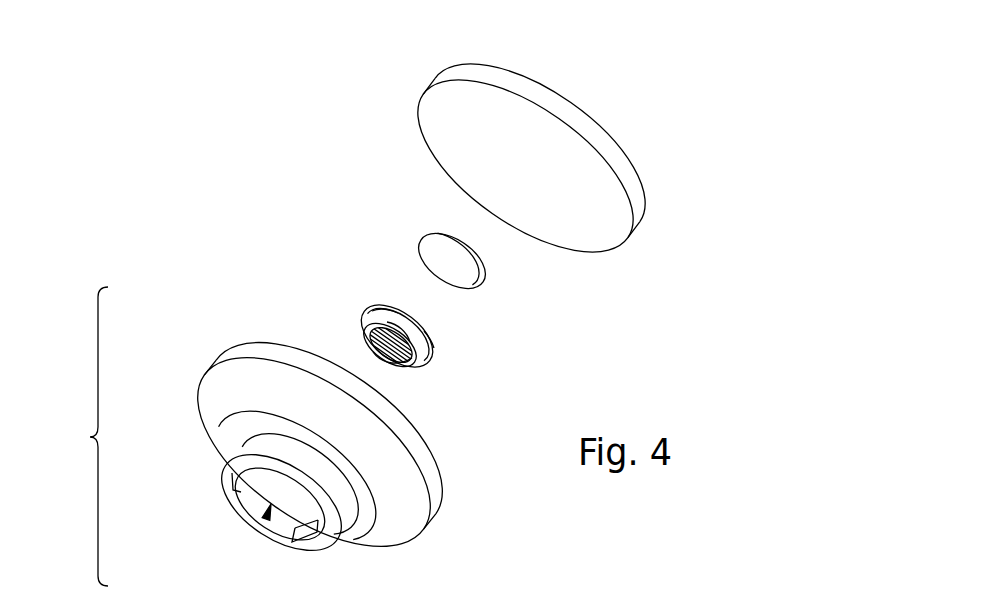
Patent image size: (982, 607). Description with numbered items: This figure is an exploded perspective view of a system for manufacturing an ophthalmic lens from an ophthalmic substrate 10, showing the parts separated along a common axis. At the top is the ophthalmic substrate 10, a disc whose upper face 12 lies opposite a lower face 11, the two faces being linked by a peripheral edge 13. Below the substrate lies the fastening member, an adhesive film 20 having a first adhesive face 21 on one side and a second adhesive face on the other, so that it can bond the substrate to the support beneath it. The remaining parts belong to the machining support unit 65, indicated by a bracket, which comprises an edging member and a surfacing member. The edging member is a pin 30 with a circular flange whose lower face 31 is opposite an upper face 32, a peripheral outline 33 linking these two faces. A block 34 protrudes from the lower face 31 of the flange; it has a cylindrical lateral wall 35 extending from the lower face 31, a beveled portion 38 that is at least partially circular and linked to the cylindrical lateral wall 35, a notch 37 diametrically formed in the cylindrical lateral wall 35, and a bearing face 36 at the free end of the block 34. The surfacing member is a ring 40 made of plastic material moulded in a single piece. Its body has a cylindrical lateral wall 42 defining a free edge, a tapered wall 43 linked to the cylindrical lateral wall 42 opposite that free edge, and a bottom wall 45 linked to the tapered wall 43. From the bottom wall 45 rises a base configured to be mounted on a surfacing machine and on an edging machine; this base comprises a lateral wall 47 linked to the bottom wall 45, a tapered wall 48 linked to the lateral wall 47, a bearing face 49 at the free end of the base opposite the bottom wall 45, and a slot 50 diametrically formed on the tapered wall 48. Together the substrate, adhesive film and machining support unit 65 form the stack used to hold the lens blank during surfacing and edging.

The ophthalmic substrate 10 is at (507, 163).
The lower face 11 is at (588, 249).
The upper face 12 is at (582, 108).
The peripheral edge 13 is at (612, 150).
The adhesive film 20 is at (435, 245).
The first adhesive face 21 is at (478, 284).
The pin 30 is at (386, 330).
The lower face 31 is at (423, 358).
The upper face 32 is at (382, 306).
The peripheral outline 33 is at (428, 340).
The block 34 is at (372, 341).
The cylindrical lateral wall 35 is at (362, 322).
The bearing face 36 is at (388, 308).
The notch 37 is at (410, 368).
The beveled portion 38 is at (408, 316).
The ring 40 is at (313, 448).
The cylindrical lateral wall 42 is at (432, 482).
The tapered wall 43 is at (210, 403).
The bottom wall 45 is at (223, 447).
The lateral wall 47 is at (343, 507).
The tapered wall 48 is at (330, 540).
The bearing face 49 is at (231, 506).
The slot 50 is at (258, 530).
The machining support unit 65 is at (81, 436).